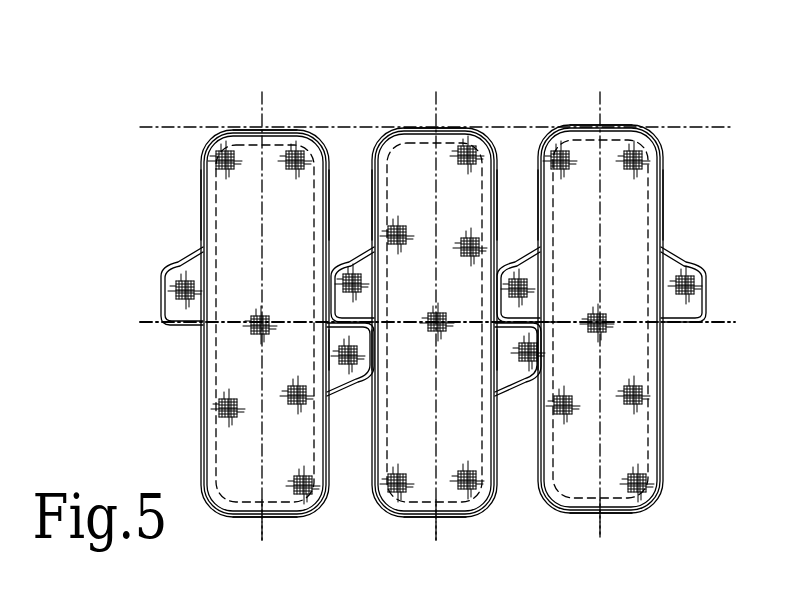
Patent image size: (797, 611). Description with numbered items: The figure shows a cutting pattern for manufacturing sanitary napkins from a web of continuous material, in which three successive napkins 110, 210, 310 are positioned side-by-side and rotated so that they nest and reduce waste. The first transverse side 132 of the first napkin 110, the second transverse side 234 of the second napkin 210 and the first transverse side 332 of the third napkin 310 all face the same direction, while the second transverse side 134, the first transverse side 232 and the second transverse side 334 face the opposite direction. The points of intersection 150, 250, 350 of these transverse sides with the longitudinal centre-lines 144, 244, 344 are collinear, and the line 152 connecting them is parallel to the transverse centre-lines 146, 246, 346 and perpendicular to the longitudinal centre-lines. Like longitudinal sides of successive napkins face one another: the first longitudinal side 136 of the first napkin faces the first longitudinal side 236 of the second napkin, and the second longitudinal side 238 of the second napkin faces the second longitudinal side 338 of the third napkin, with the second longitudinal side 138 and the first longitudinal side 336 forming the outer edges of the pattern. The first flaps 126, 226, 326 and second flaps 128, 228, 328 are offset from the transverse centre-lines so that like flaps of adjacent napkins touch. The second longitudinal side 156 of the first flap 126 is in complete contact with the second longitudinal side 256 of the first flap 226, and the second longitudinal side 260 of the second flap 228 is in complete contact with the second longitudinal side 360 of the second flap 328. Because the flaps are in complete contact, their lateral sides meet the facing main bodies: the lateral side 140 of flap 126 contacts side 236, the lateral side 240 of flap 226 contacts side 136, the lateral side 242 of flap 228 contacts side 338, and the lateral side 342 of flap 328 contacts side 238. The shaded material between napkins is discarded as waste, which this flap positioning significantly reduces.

The first napkin 110 is at (615, 68).
The second napkin 210 is at (452, 68).
The third napkin 310 is at (278, 70).
The first flap of the first napkin 126 is at (518, 290).
The second flap of the first napkin 128 is at (684, 282).
The first transverse side of the first napkin 132 is at (622, 124).
The second transverse side of the first napkin 134 is at (630, 516).
The first longitudinal side of the first napkin 136 is at (538, 218).
The second longitudinal side of the first napkin 138 is at (664, 190).
The lateral side of the first flap of the first napkin 140 is at (500, 292).
The longitudinal centre-line of the first napkin 144 is at (602, 529).
The transverse centre-line of the first napkin 146 is at (436, 313).
The point of intersection of the first napkin 150 is at (599, 124).
The line connecting the points of intersection 152 is at (433, 126).
The second longitudinal side of the first flap of the first napkin 156 is at (505, 321).
The first flap of the second napkin 226 is at (518, 378).
The second flap of the second napkin 228 is at (362, 375).
The first transverse side of the second napkin 232 is at (460, 520).
The second transverse side of the second napkin 234 is at (455, 126).
The first longitudinal side of the second napkin 236 is at (498, 185).
The second longitudinal side of the second napkin 238 is at (372, 225).
The lateral side of the first flap of the second napkin 240 is at (548, 375).
The lateral side of the second flap of the second napkin 242 is at (340, 383).
The longitudinal centre-line of the second napkin 244 is at (437, 531).
The transverse centre-line of the second napkin 246 is at (436, 327).
The point of intersection of the second napkin 250 is at (435, 126).
The second longitudinal side of the first flap of the second napkin 256 is at (527, 352).
The second longitudinal side of the second flap of the second napkin 260 is at (352, 358).
The first flap of the third napkin 326 is at (190, 278).
The second flap of the third napkin 328 is at (342, 282).
The first transverse side of the third napkin 332 is at (279, 126).
The second transverse side of the third napkin 334 is at (285, 520).
The first longitudinal side of the third napkin 336 is at (200, 205).
The second longitudinal side of the third napkin 338 is at (330, 190).
The lateral side of the second flap of the third napkin 342 is at (382, 288).
The longitudinal centre-line of the third napkin 344 is at (263, 531).
The transverse centre-line of the third napkin 346 is at (436, 335).
The point of intersection of the third napkin 350 is at (260, 126).
The second longitudinal side of the second flap of the third napkin 360 is at (345, 321).